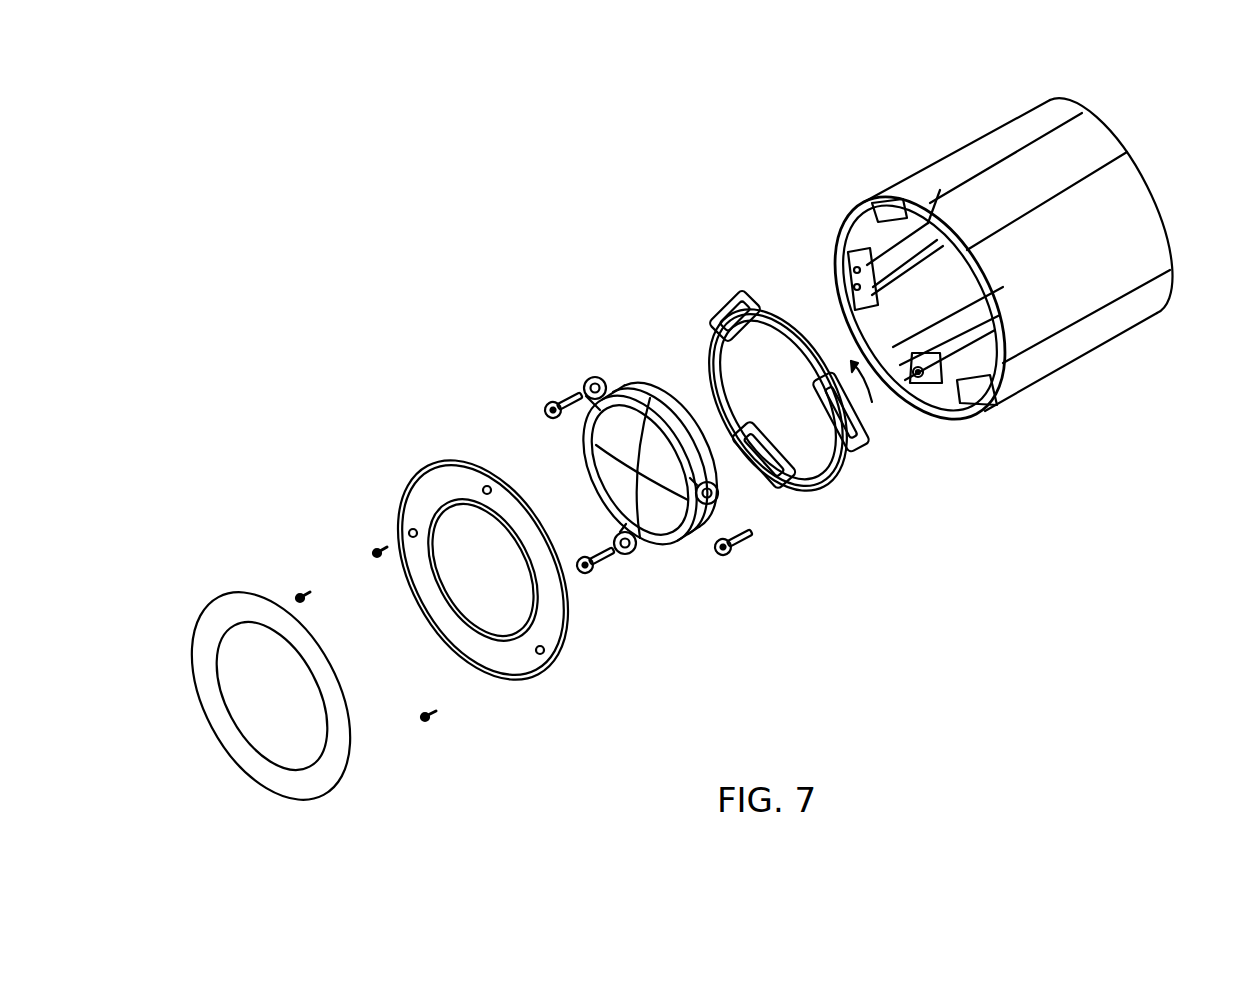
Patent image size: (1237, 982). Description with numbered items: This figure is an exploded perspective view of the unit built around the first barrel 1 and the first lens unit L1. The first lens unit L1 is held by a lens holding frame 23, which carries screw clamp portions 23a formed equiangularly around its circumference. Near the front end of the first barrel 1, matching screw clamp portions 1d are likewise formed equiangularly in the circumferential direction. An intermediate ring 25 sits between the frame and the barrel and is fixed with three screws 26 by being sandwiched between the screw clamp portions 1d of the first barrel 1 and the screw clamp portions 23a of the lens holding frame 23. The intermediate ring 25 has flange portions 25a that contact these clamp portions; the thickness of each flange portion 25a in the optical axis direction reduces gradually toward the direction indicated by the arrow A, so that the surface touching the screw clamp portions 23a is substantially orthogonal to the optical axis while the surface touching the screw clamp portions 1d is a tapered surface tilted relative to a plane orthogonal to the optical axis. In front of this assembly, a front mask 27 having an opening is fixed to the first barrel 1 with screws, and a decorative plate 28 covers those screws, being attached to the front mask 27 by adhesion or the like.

The first barrel 1 is at (937, 152).
The screw clamp portions 1d is at (900, 203).
The lens holding frame 23 is at (643, 390).
The screw clamp portions 23a is at (588, 378).
The intermediate ring 25 is at (787, 318).
The flange portions 25a is at (727, 292).
The screws 26 is at (553, 422).
The front mask 27 is at (523, 673).
The decorative plate 28 is at (333, 788).
The first lens unit L1 is at (668, 534).
The arrow A is at (872, 393).